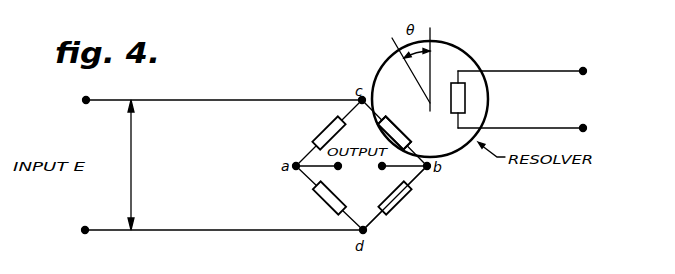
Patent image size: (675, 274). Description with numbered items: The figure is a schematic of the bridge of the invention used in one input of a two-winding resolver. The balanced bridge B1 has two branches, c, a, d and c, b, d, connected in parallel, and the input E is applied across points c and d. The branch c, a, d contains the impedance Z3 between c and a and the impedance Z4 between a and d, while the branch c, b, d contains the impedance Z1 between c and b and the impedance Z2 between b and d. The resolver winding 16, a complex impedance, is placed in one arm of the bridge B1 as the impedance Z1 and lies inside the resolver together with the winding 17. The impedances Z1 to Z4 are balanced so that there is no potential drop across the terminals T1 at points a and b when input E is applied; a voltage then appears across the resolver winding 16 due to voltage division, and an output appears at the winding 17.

The resolver winding 16 is at (393, 121).
The winding 17 is at (452, 113).
The impedance Z1 is at (401, 132).
The impedance Z2 is at (398, 205).
The impedance Z3 is at (324, 131).
The impedance Z4 is at (322, 197).
The balanced bridge B1 is at (419, 180).
The terminals T1 is at (356, 170).